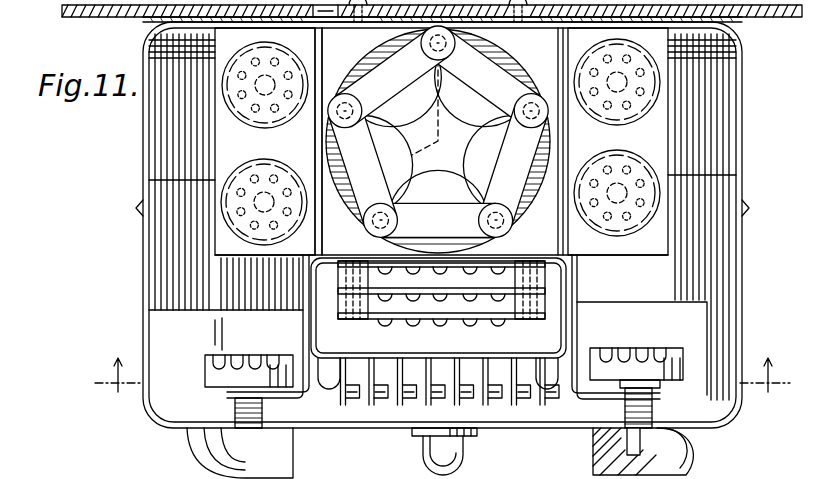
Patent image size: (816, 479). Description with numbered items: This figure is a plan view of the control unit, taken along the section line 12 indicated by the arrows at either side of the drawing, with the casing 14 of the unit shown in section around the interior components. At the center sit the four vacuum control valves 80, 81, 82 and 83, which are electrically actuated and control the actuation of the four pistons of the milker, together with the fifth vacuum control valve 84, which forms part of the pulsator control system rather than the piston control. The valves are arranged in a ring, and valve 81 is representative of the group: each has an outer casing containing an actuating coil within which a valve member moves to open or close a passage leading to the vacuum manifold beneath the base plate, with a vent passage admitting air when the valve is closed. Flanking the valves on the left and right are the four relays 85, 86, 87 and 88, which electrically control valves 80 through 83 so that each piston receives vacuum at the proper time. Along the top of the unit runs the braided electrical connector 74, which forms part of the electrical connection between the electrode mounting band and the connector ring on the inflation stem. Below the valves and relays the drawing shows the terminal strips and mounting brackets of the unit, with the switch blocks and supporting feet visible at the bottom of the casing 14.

The section line 12 is at (442, 395).
The casing wall 14 is at (331, 176).
The braided electrical connector 74 is at (495, 23).
The vacuum control valve 80 is at (402, 95).
The vacuum control valve 81 is at (388, 160).
The vacuum control valve 82 is at (438, 186).
The vacuum control valve 83 is at (487, 160).
The fifth vacuum control valve 84 is at (474, 95).
The relay 85 is at (250, 120).
The relay 86 is at (272, 160).
The relay 87 is at (597, 158).
The relay 88 is at (625, 122).